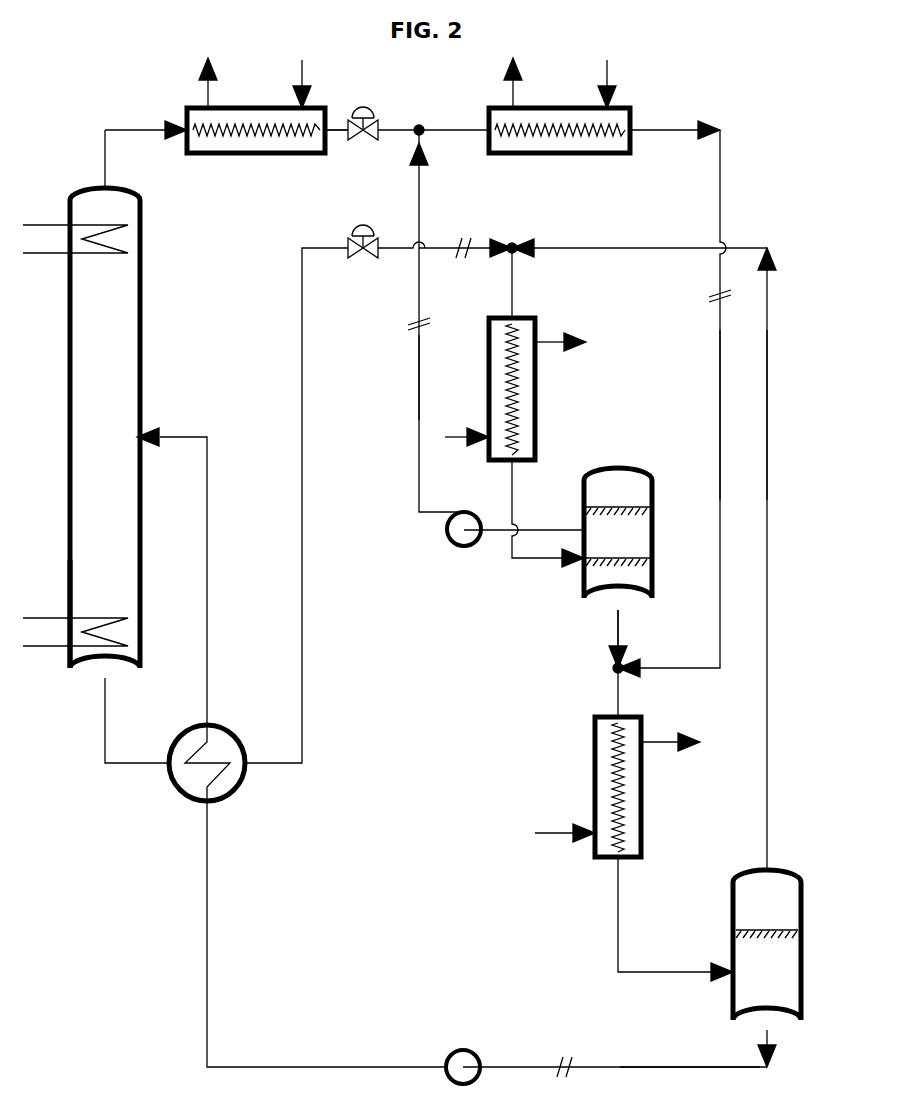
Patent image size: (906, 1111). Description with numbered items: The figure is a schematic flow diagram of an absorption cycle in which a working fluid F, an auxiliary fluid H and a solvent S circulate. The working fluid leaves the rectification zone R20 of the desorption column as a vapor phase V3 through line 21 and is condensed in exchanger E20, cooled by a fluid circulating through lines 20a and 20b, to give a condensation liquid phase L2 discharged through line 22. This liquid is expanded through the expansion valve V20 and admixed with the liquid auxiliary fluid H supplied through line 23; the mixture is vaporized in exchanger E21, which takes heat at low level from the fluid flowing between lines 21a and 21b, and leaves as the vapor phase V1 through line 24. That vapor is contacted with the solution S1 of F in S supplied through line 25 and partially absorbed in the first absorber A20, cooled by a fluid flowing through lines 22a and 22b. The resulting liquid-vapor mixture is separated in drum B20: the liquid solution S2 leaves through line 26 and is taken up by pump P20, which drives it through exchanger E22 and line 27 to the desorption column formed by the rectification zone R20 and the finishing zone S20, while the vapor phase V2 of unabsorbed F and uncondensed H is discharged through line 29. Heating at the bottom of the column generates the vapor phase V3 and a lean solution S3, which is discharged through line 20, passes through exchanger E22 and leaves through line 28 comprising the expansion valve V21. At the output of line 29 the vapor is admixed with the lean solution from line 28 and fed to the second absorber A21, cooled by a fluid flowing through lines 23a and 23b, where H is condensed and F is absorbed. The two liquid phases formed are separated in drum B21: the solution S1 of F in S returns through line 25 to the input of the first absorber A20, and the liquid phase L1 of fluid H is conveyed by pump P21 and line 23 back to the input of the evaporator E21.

The line 20 is at (128, 767).
The line 20a is at (306, 68).
The line 20b is at (203, 66).
The line 21 is at (143, 128).
The line 21a is at (609, 70).
The line 21b is at (507, 68).
The line 22 is at (340, 124).
The line 22a is at (560, 836).
The line 22b is at (659, 741).
The line 23 is at (421, 284).
The line 23a is at (463, 447).
The line 23b is at (560, 340).
The line 24 is at (675, 128).
The line 25 is at (624, 633).
The line 26 is at (583, 1066).
The line 27 is at (212, 540).
The line 28 is at (447, 247).
The line 29 is at (748, 247).
The rectification zone R20 is at (140, 350).
The finishing zone S20 is at (140, 547).
The exchanger E20 is at (270, 157).
The exchanger E21 is at (557, 157).
The exchanger E22 is at (240, 789).
The expansion valve V20 is at (377, 117).
The expansion valve V21 is at (366, 232).
The vapor phase V1 is at (718, 385).
The vapor phase V2 is at (765, 385).
The vapor phase V3 is at (103, 150).
The liquid phase L1 is at (418, 349).
The condensation liquid phase L2 is at (340, 138).
The solution S1 is at (614, 635).
The solution S2 is at (667, 1066).
The solution S3 is at (388, 252).
The first absorber A20 is at (641, 807).
The second absorber A21 is at (537, 404).
The drum B20 is at (737, 880).
The drum B21 is at (638, 474).
The pump P20 is at (467, 1050).
The pump P21 is at (457, 548).